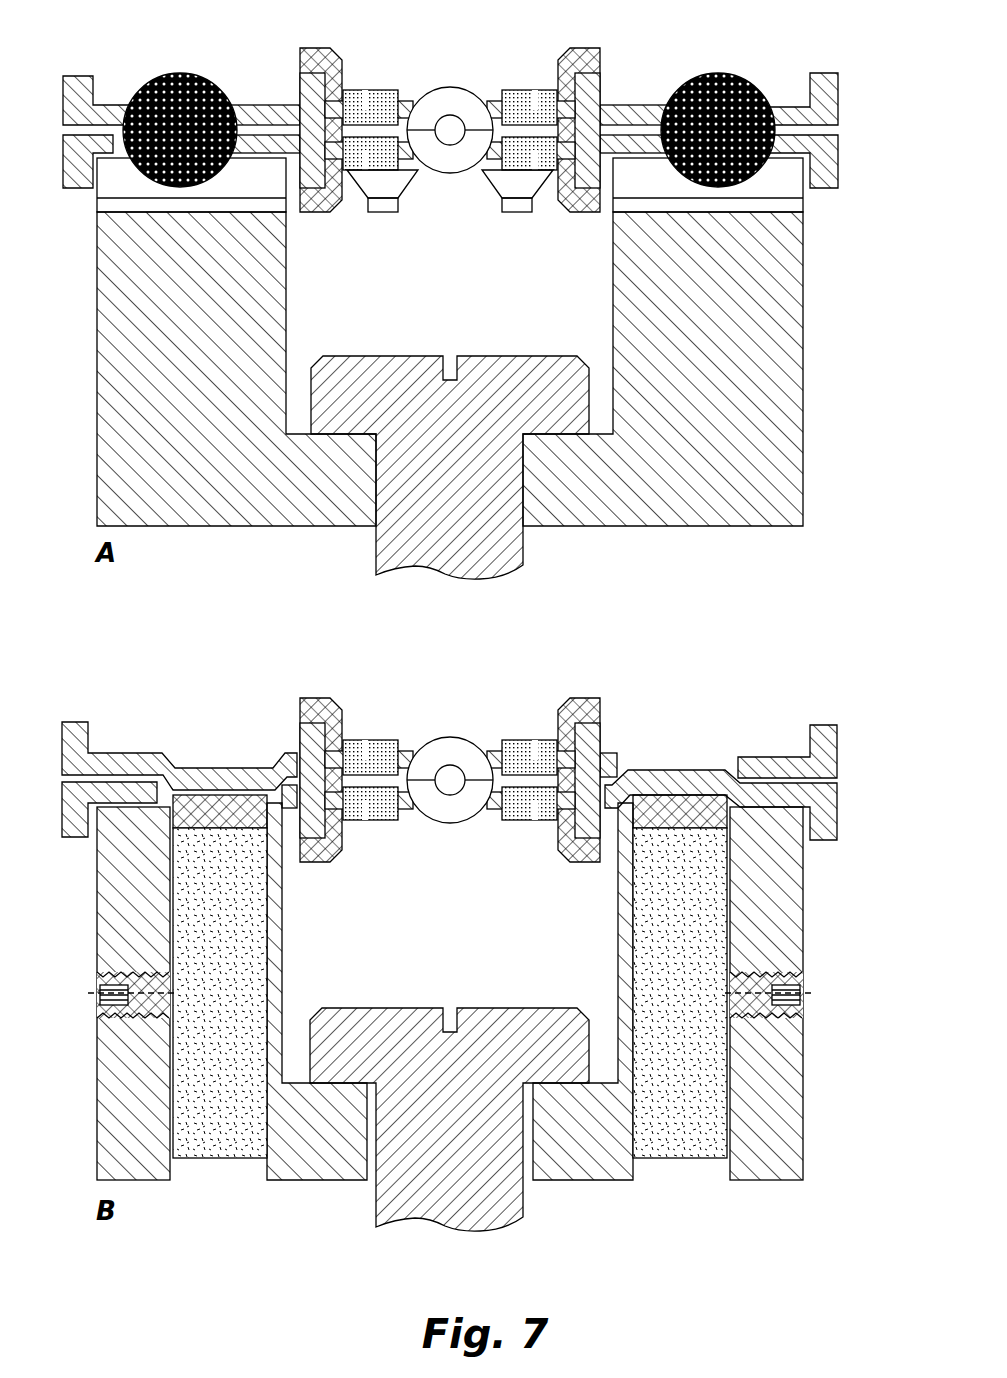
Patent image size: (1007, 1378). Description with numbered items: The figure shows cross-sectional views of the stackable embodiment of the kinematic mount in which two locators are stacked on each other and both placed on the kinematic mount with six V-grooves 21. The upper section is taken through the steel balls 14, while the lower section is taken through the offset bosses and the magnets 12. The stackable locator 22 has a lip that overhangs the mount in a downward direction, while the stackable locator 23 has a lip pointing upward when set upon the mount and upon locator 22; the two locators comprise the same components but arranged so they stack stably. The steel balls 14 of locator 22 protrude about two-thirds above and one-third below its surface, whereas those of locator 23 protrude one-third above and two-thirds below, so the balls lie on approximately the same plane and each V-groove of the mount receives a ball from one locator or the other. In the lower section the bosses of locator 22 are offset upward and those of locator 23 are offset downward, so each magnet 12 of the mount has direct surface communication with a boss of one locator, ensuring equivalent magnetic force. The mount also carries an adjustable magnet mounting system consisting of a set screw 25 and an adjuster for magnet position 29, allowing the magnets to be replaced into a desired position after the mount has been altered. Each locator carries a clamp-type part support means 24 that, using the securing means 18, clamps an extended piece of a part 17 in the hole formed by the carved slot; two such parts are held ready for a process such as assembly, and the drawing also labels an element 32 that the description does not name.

The magnet 12 is at (192, 790).
The steel ball 14 is at (172, 72).
The part 17 is at (452, 100).
The securing means 18 is at (372, 90).
The kinematic mount with six V-grooves 21 is at (762, 262).
The stackable locator 22 is at (828, 146).
The stackable locator 23 is at (828, 80).
The part support means 24 is at (318, 48).
The set screw 25 is at (797, 995).
The adjuster for magnet position 29 is at (240, 1135).
The plunger 32 is at (505, 530).